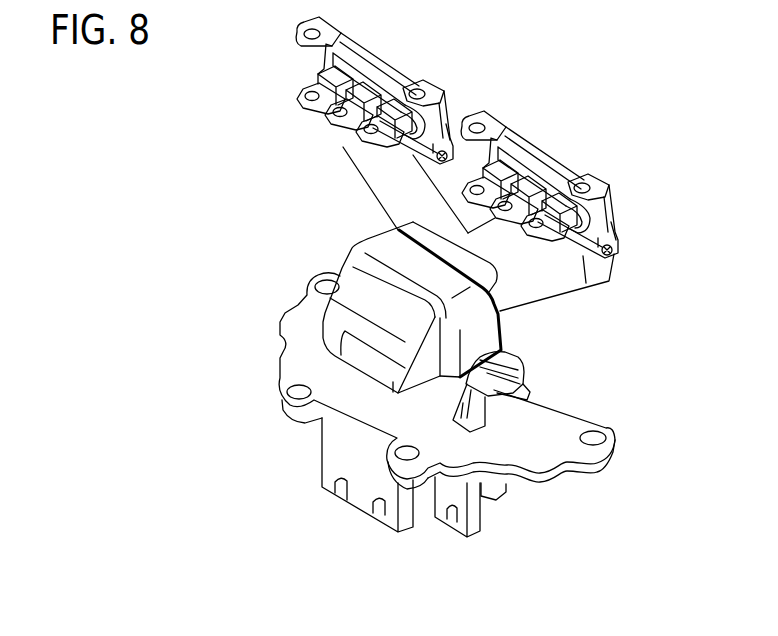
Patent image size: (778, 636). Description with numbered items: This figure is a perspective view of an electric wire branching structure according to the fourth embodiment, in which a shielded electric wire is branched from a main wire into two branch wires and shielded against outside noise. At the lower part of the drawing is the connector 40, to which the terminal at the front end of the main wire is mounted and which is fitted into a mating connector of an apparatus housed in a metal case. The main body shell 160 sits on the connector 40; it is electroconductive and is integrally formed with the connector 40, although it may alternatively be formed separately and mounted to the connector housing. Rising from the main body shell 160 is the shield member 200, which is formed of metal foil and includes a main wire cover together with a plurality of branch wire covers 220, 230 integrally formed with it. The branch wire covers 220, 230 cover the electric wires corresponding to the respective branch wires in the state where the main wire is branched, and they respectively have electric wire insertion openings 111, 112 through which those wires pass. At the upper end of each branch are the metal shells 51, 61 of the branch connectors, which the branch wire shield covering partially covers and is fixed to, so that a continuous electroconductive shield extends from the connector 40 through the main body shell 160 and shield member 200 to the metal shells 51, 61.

The connector 40 is at (503, 520).
The metal shell 51 is at (384, 73).
The metal shell 61 is at (537, 158).
The electric wire insertion opening 111 is at (440, 128).
The electric wire insertion opening 112 is at (616, 224).
The main body shell 160 is at (328, 303).
The shield member 200 is at (345, 214).
The branch wire cover 220 is at (372, 188).
The branch wire cover 230 is at (562, 292).